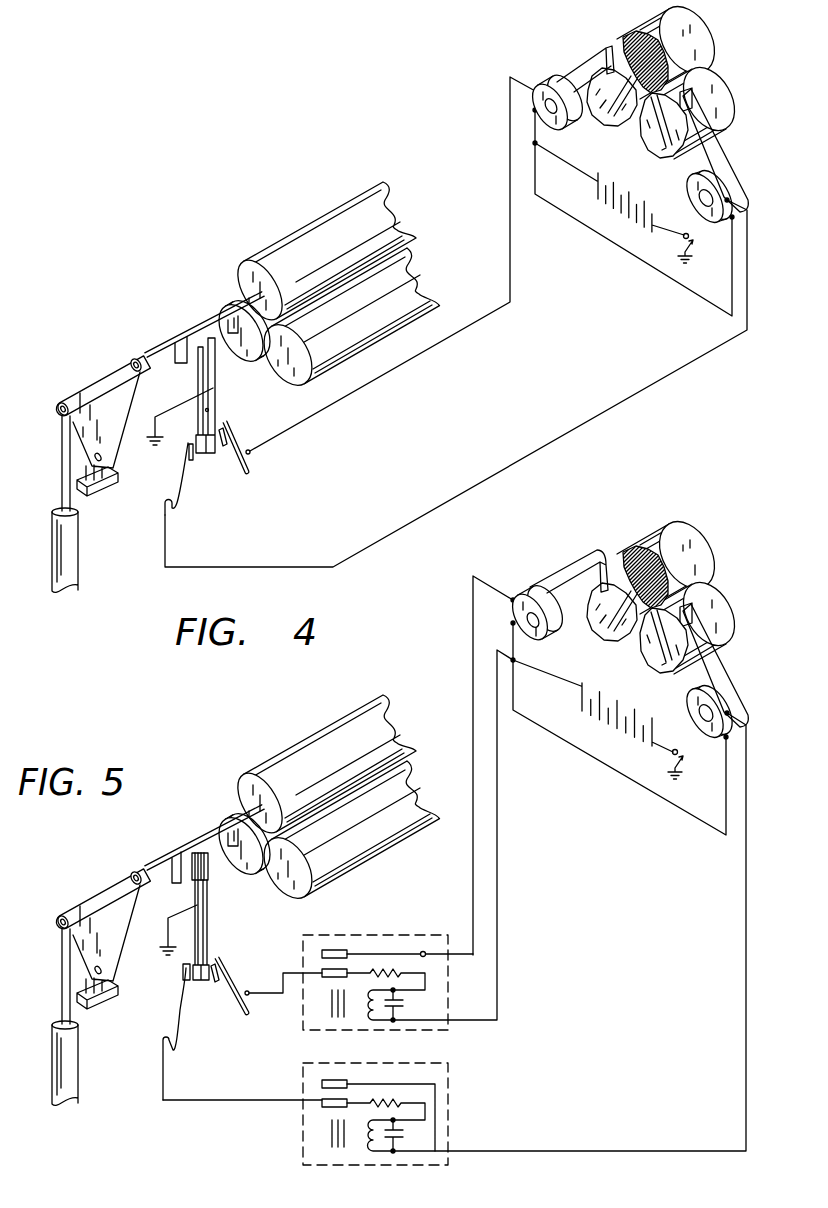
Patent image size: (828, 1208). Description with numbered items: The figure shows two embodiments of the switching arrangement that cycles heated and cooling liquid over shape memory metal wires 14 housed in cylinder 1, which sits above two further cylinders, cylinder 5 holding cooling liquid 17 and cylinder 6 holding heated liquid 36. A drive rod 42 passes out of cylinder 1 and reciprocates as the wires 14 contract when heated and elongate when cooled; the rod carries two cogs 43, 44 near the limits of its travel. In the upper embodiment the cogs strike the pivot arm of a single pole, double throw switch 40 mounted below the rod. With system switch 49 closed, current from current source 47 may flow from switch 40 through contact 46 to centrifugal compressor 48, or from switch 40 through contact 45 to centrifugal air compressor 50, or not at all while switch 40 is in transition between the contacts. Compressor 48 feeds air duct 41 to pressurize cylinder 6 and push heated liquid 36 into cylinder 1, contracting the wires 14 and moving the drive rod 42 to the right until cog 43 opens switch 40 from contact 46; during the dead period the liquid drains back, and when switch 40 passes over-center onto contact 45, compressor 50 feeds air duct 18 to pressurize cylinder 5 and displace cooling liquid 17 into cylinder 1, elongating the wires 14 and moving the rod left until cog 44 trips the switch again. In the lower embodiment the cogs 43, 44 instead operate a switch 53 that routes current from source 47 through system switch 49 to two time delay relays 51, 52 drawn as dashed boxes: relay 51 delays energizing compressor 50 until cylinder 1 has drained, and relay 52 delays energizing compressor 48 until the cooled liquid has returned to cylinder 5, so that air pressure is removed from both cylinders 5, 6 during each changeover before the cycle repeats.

In FIG. 4, the cylinder 1 is at (312, 220).
In FIG. 5, the cylinder 1 is at (280, 749).
In FIG. 4, the cylinder 5 is at (438, 298).
In FIG. 5, the cylinder 5 is at (398, 847).
In FIG. 4, the cylinder 6 is at (597, 115).
In FIG. 5, the cylinder 6 is at (600, 640).
In FIG. 4, the shape memory metal wires 14 is at (633, 37).
In FIG. 5, the shape memory metal wires 14 is at (627, 557).
In FIG. 4, the cooling liquid 17 is at (647, 147).
In FIG. 5, the cooling liquid 17 is at (673, 690).
In FIG. 4, the air duct 18 is at (717, 107).
In FIG. 5, the air duct 18 is at (697, 612).
In FIG. 4, the heated liquid 36 is at (603, 132).
In FIG. 5, the heated liquid 36 is at (623, 661).
In FIG. 4, the single pole, double throw switch 40 is at (214, 388).
In FIG. 4, the air duct 41 is at (604, 47).
In FIG. 5, the air duct 41 is at (587, 553).
In FIG. 4, the drive rod 42 is at (190, 330).
In FIG. 5, the drive rod 42 is at (172, 850).
In FIG. 4, the cog 43 is at (178, 368).
In FIG. 5, the cog 43 is at (171, 882).
In FIG. 4, the cog 44 is at (232, 360).
In FIG. 5, the cog 44 is at (230, 872).
In FIG. 4, the contact 45 is at (192, 475).
In FIG. 4, the contact 46 is at (233, 470).
In FIG. 4, the current source 47 is at (597, 197).
In FIG. 5, the current source 47 is at (573, 697).
In FIG. 4, the centrifugal compressor 48 is at (540, 83).
In FIG. 5, the centrifugal compressor 48 is at (529, 590).
In FIG. 4, the system switch 49 is at (693, 246).
In FIG. 5, the system switch 49 is at (683, 767).
In FIG. 4, the centrifugal air compressor 50 is at (708, 180).
In FIG. 5, the centrifugal air compressor 50 is at (733, 688).
In FIG. 5, the time delay relay 51 is at (302, 1073).
In FIG. 5, the time delay relay 52 is at (302, 1019).
In FIG. 5, the switch 53 is at (206, 913).